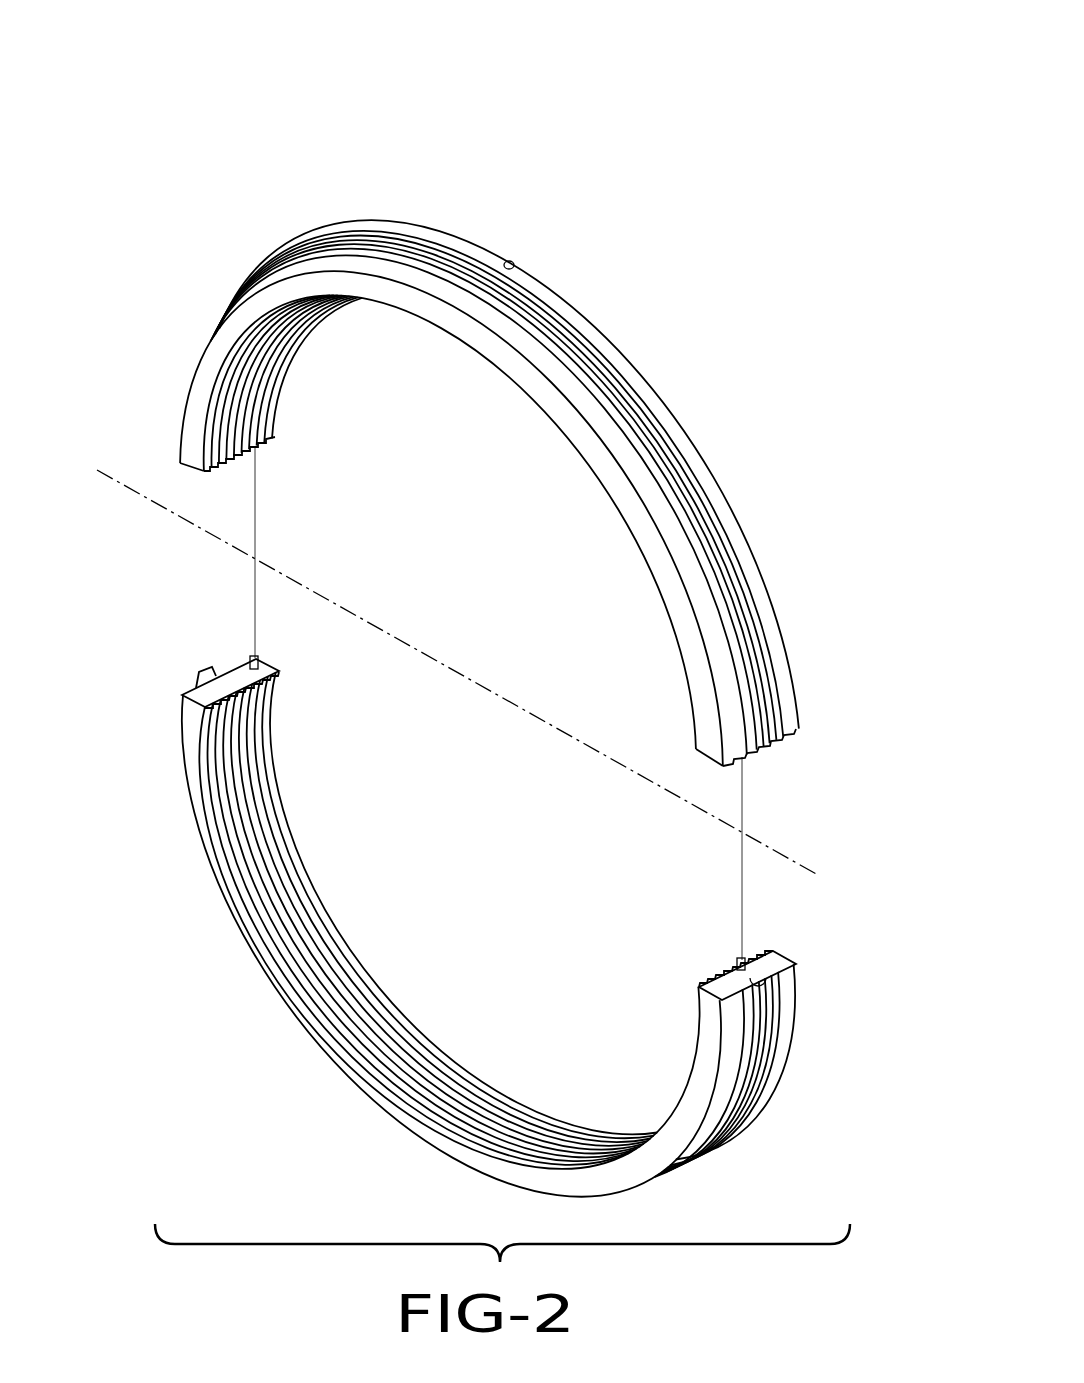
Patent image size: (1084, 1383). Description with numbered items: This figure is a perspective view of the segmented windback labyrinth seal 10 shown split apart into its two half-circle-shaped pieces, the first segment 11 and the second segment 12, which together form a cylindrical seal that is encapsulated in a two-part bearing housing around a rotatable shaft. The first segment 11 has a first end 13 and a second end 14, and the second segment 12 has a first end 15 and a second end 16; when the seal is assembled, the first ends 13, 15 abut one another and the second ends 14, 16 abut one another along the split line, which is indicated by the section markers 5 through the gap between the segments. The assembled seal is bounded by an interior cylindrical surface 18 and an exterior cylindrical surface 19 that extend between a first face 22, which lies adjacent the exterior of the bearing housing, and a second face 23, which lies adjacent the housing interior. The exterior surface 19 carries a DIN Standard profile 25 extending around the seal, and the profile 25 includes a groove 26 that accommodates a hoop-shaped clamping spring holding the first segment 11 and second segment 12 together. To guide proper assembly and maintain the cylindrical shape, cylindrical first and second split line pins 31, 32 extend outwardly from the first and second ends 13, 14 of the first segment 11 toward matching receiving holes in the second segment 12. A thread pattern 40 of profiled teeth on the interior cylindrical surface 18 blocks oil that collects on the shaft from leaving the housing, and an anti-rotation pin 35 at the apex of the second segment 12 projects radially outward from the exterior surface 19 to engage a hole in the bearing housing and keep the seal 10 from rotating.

The section line 5- 5 is at (97, 468).
The segmented labyrinth seal 10 is at (256, 122).
The first segment 11 is at (487, 822).
The second segment 12 is at (464, 478).
The first end 13 is at (229, 578).
The second end 14 is at (736, 882).
The first end 15 is at (190, 468).
The second end 16 is at (705, 758).
The interior cylindrical surface 18 is at (263, 952).
The exterior cylindrical surface 19 is at (670, 522).
The first face 22 is at (396, 919).
The second face 23 is at (790, 950).
The profile 25 is at (505, 487).
The groove 26 is at (654, 437).
The first split line pin 31 is at (262, 667).
The second split line pin 32 is at (740, 968).
The anti-rotation pin 35 is at (516, 262).
The thread pattern 40 is at (396, 919).